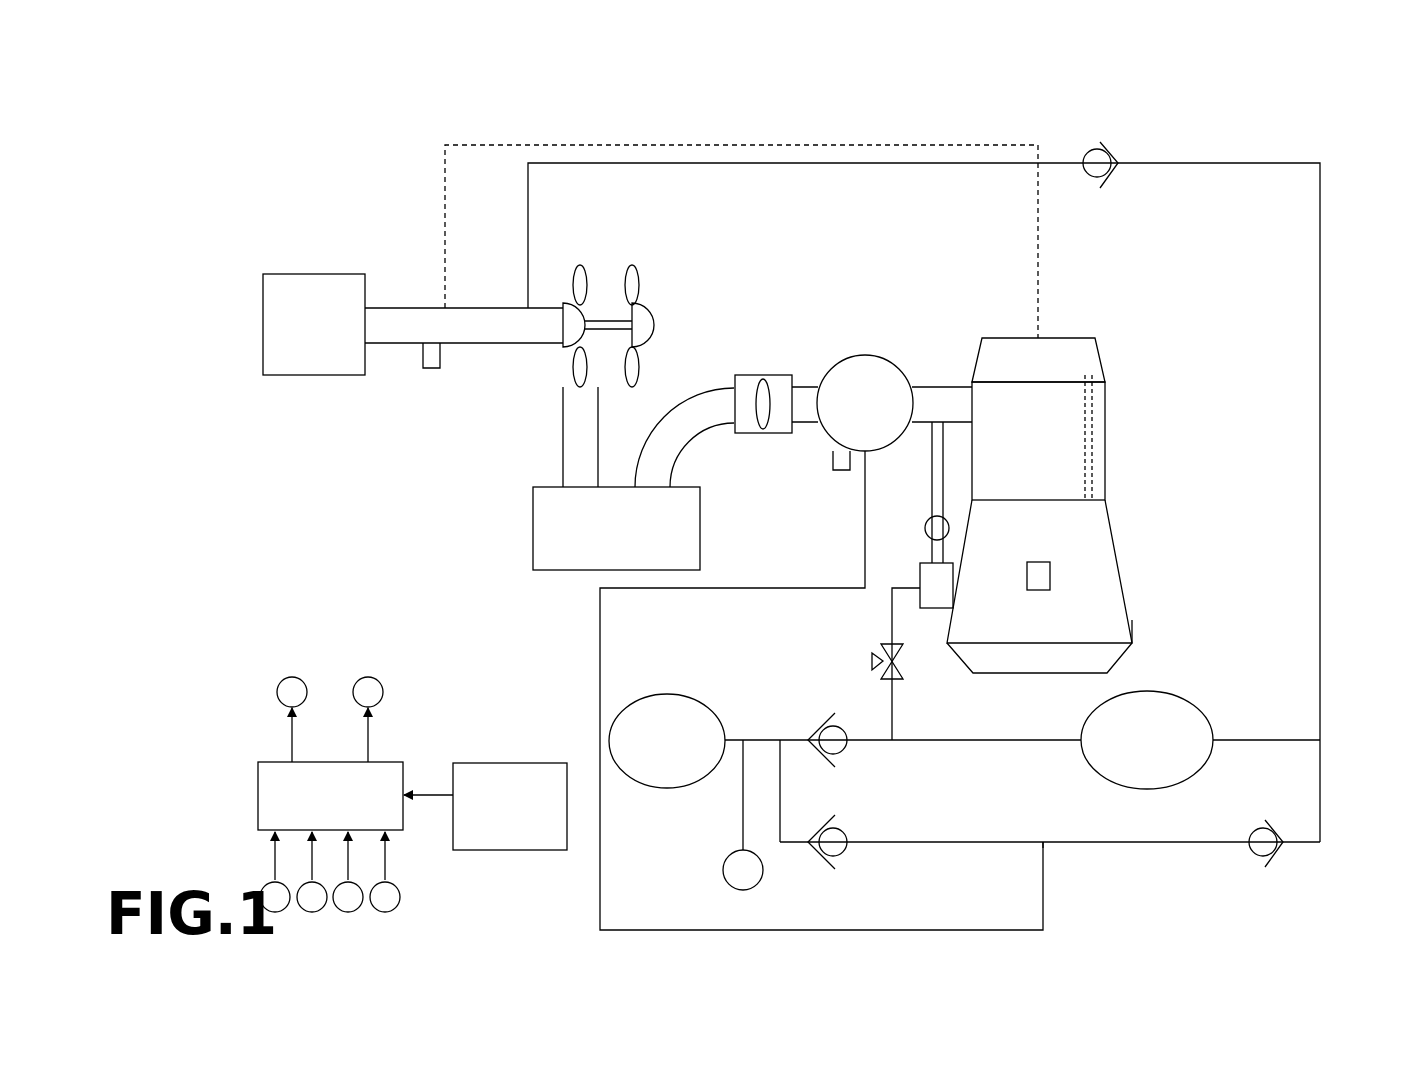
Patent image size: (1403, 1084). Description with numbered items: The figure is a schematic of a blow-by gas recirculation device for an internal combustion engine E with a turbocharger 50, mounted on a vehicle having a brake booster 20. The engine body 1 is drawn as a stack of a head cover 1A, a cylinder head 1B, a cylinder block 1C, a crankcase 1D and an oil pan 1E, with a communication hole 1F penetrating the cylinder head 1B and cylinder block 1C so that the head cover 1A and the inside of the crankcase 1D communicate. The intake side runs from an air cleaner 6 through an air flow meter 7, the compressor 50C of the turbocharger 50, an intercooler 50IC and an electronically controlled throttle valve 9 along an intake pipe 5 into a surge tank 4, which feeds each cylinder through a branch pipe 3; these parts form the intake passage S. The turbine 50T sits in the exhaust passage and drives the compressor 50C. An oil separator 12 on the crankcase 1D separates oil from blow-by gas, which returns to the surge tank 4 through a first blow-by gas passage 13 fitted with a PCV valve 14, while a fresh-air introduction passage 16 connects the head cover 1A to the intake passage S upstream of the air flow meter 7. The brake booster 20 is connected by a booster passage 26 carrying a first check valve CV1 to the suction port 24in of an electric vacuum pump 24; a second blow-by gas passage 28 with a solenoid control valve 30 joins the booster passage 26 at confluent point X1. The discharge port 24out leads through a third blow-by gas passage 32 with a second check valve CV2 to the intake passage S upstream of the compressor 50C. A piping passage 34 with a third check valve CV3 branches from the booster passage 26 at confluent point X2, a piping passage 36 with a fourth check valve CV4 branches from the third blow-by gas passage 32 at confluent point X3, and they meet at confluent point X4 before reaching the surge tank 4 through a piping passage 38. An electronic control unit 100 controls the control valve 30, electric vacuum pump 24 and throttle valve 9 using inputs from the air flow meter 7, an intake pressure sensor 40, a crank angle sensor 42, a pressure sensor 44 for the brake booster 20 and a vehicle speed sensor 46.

The engine body 1 is at (1095, 509).
The head cover 1A is at (1102, 352).
The cylinder head 1B is at (1107, 400).
The cylinder block 1C is at (1110, 470).
The crankcase 1D is at (1125, 603).
The oil pan 1E is at (1070, 662).
The communication hole 1F is at (1095, 432).
The branch pipe 3 is at (940, 387).
The surge tank 4 is at (866, 355).
The intake pipe 5 is at (808, 387).
The air cleaner 6 is at (316, 274).
The air flow meter 7 is at (432, 370).
The throttle valve 9 is at (760, 375).
The oil separator 12 is at (935, 608).
The first blow-by gas passage 13 is at (930, 490).
The PCV valve 14 is at (925, 530).
The fresh-air introduction passage 16 is at (478, 143).
The brake booster 20 is at (662, 695).
The electric vacuum pump 24 is at (1190, 700).
The suction port 24in is at (1082, 745).
The discharge port 24out is at (1213, 745).
The booster passage 26 is at (960, 742).
The second blow-by gas passage 28 is at (890, 612).
The control valve 30 is at (870, 661).
The third blow-by gas passage 32 is at (1322, 392).
The piping passage 34 is at (770, 830).
The piping passage 36 is at (1180, 845).
The piping passage 38 is at (600, 895).
The intake pressure sensor 40 is at (842, 472).
The crank angle sensor 42 is at (1050, 577).
The pressure sensor 44 is at (723, 866).
The vehicle speed sensor 46 is at (507, 763).
The turbocharger 50 is at (650, 290).
The compressor 50C is at (580, 265).
The turbine 50T is at (632, 265).
The intercooler 50IC is at (533, 525).
The electronic control unit 100 is at (328, 760).
The first check valve CV1 is at (848, 750).
The second check valve CV2 is at (1098, 184).
The third check valve CV3 is at (848, 851).
The fourth check valve CV4 is at (1263, 859).
The internal combustion engine E is at (1093, 283).
The intake passage S is at (493, 348).
The confluent point X1 is at (897, 735).
The confluent point X2 is at (783, 745).
The confluent point X3 is at (1322, 740).
The confluent point X4 is at (1045, 852).